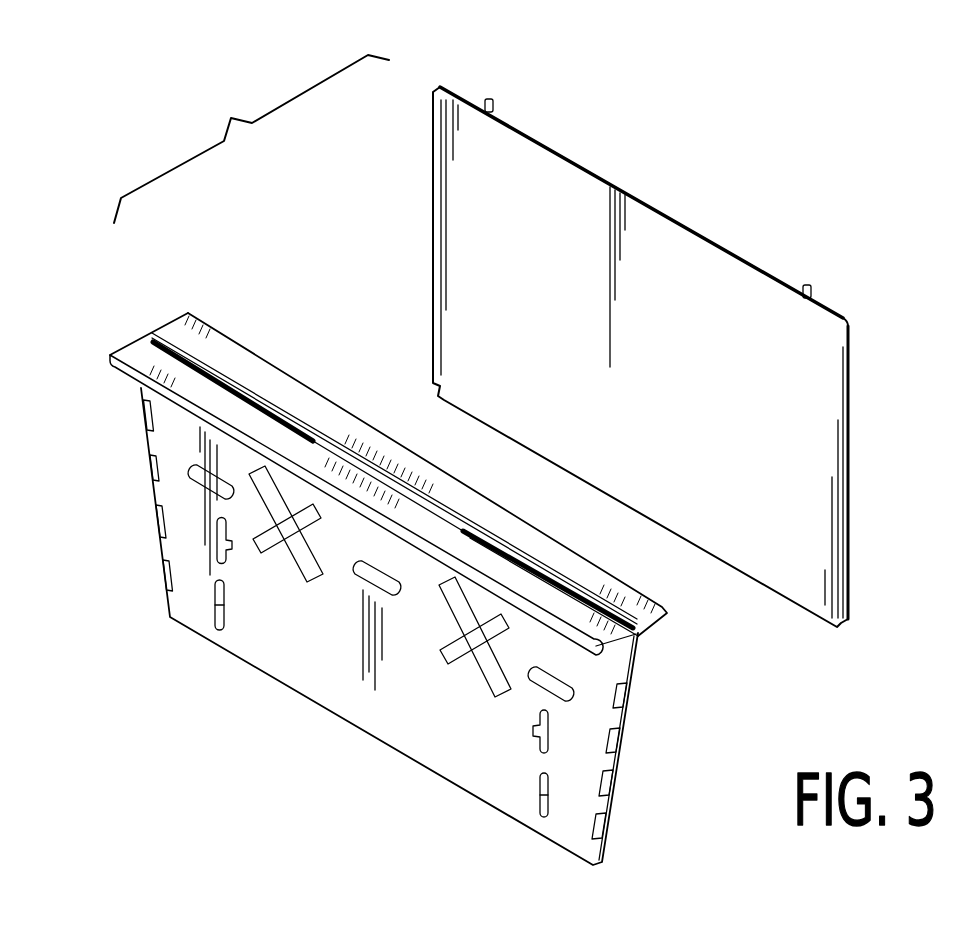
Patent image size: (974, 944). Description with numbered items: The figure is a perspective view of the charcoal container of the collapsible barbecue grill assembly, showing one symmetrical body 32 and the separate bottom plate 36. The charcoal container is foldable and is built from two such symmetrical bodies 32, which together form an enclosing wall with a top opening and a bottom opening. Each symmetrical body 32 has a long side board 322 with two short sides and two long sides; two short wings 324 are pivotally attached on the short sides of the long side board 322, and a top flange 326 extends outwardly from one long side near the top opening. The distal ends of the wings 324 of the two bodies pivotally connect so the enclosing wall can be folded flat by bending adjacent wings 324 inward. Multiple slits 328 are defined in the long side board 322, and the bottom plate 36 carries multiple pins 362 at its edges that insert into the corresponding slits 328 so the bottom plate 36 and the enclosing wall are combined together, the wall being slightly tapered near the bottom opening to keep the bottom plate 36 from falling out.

The symmetrical body 32 is at (433, 588).
The long side board 322 is at (263, 643).
The short wing 324 is at (172, 354).
The top flange 326 is at (433, 472).
The slit 328 is at (548, 818).
The bottom plate 36 is at (807, 424).
The pin 362 is at (812, 285).